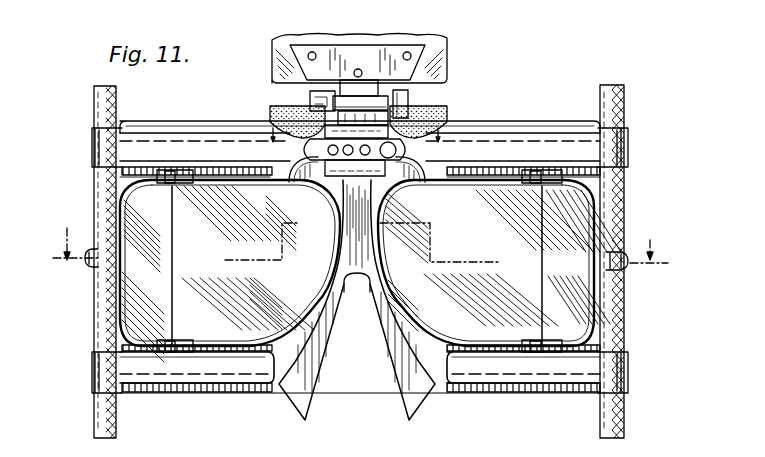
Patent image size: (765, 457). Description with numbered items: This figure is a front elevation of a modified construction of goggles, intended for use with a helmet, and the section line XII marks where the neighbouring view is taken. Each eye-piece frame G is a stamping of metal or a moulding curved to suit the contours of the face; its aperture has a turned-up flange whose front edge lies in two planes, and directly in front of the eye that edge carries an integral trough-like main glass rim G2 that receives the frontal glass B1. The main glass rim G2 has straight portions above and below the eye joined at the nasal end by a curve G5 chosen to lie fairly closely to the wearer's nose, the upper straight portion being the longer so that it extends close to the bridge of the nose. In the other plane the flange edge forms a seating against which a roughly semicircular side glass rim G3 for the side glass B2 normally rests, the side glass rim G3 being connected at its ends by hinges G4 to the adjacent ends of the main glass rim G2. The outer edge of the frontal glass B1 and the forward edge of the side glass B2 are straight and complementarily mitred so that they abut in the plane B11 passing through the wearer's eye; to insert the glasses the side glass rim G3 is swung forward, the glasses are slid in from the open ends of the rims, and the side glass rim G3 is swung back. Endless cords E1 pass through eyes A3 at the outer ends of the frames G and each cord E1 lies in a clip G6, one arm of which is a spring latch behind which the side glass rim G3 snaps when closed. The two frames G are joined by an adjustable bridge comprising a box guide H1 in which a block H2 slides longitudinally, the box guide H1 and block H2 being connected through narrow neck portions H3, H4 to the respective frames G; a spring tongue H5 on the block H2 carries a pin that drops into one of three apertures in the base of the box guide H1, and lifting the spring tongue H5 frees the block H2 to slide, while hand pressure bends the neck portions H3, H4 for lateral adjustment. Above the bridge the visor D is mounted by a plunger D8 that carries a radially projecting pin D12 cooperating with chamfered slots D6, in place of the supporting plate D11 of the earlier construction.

The endless cord E1 is at (607, 108).
The eye A3 is at (602, 158).
The main glass rim G2 is at (207, 178).
The eye-piece frame G is at (150, 345).
The side glass rim G3 is at (128, 174).
The hinge G4 is at (170, 180).
The curve G5 is at (317, 288).
The clip G6 is at (630, 258).
The frontal glass B1 is at (445, 320).
The side glass B2 is at (117, 230).
The plane B11 is at (168, 262).
The visor D is at (440, 78).
The slots D6 is at (322, 108).
The plunger D8 is at (325, 90).
The supporting plate D11 is at (373, 52).
The pin D12 is at (359, 48).
The box guide H1 is at (350, 175).
The block H2 is at (388, 127).
The neck portion H3 is at (290, 141).
The neck portion H4 is at (412, 146).
The spring tongue H5 is at (300, 128).
The section line XII is at (356, 235).